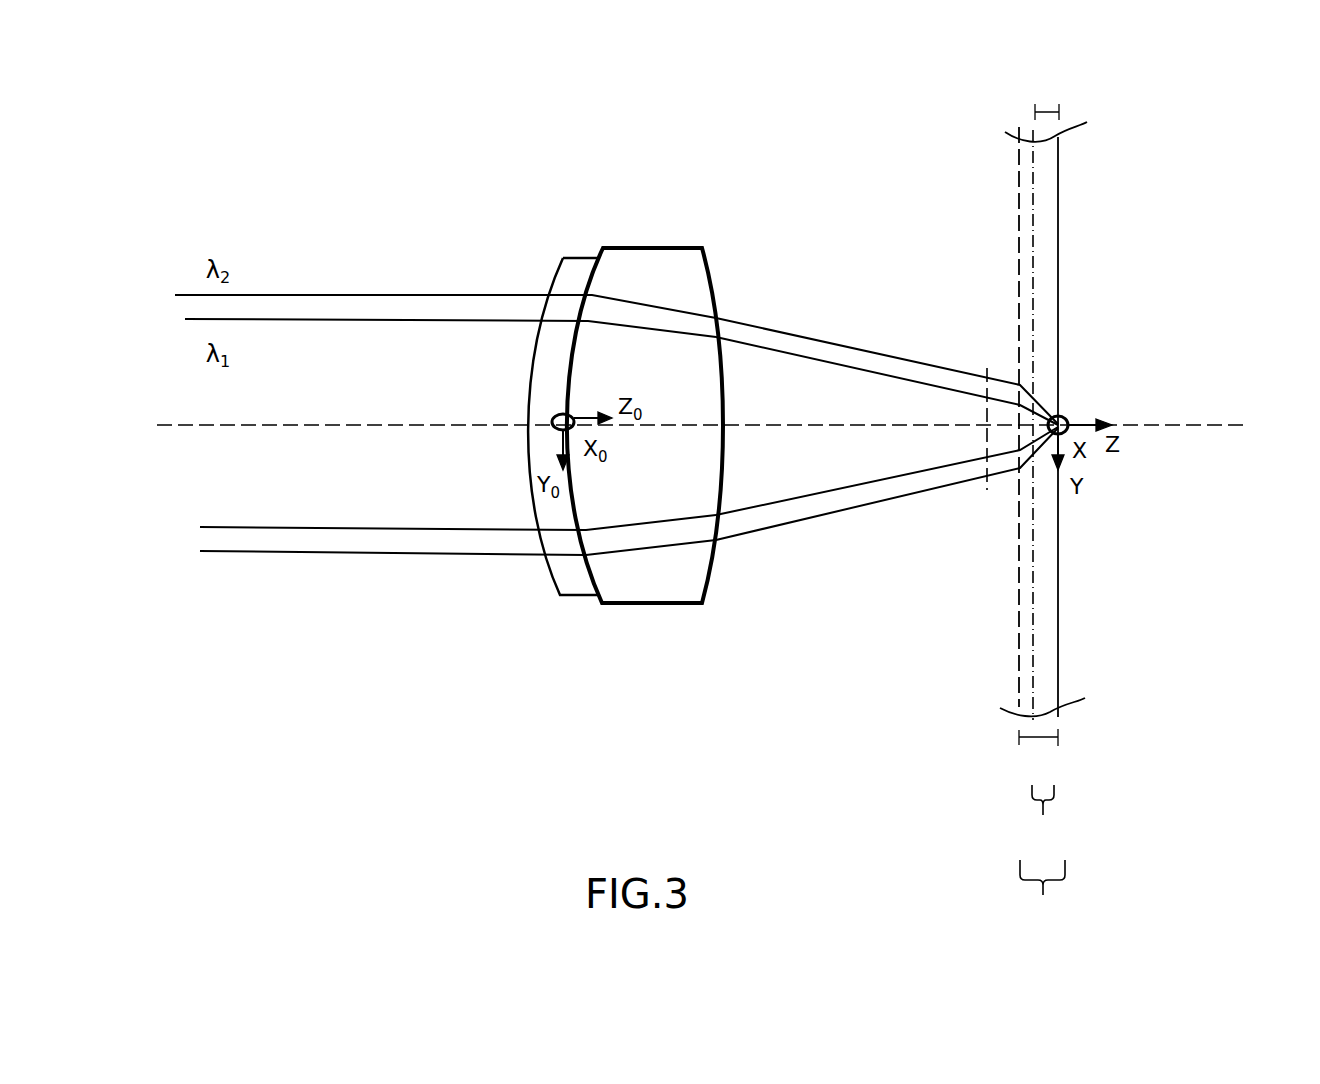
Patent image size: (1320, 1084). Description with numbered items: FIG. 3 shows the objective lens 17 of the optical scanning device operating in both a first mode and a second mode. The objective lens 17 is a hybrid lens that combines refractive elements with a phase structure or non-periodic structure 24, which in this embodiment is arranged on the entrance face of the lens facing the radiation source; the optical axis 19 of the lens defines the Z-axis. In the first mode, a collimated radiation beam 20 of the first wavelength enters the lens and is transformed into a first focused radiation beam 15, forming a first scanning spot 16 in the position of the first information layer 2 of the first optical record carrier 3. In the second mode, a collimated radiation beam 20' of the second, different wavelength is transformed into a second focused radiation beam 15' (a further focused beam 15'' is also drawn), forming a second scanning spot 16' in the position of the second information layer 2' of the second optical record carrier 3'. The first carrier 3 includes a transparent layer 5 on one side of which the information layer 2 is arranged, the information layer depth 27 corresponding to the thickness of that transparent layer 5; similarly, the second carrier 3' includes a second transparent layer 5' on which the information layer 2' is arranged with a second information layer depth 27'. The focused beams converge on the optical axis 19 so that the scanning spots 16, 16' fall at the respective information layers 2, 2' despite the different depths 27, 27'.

The first information layer 2 is at (1075, 419).
The second information layer 2' is at (1095, 425).
The first optical record carrier 3 is at (1043, 817).
The second optical record carrier 3' is at (1042, 897).
The transparent layer 5 is at (1100, 420).
The second transparent layer 5' is at (1082, 417).
The first focused radiation beam 15 is at (887, 369).
The second focused radiation beam 15' is at (887, 389).
The focused light beam of first wavelength 15'' is at (892, 421).
The first scanning spot 16 is at (1106, 381).
The second scanning spot 16' is at (1110, 412).
The objective lens 17 is at (655, 248).
The optical axis 19 is at (1207, 428).
The collimated radiation beam 20 is at (450, 349).
The collimated radiation beam 20' is at (445, 269).
The non-periodic structure 24 is at (600, 258).
The first information layer depth 27 is at (1089, 104).
The second information layer depth 27' is at (1001, 753).